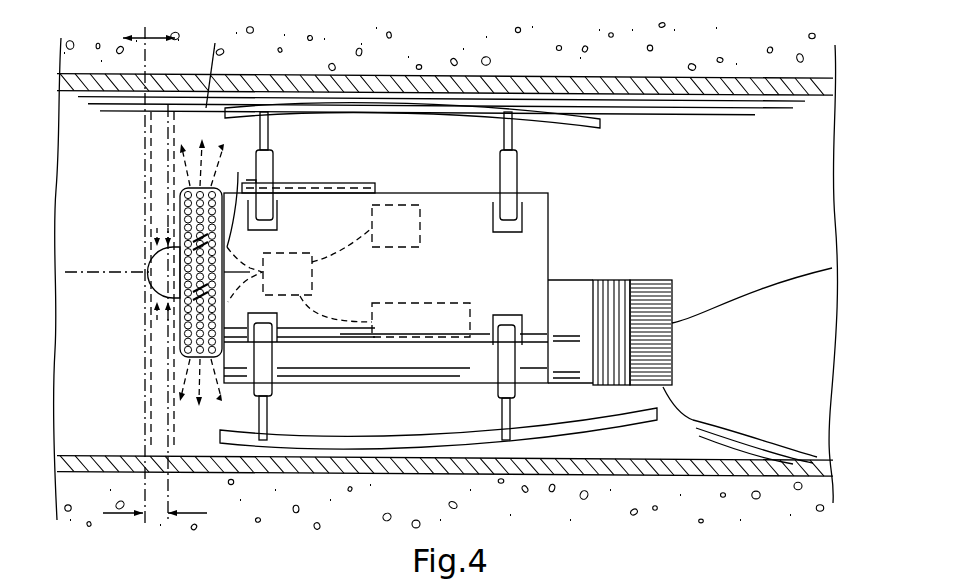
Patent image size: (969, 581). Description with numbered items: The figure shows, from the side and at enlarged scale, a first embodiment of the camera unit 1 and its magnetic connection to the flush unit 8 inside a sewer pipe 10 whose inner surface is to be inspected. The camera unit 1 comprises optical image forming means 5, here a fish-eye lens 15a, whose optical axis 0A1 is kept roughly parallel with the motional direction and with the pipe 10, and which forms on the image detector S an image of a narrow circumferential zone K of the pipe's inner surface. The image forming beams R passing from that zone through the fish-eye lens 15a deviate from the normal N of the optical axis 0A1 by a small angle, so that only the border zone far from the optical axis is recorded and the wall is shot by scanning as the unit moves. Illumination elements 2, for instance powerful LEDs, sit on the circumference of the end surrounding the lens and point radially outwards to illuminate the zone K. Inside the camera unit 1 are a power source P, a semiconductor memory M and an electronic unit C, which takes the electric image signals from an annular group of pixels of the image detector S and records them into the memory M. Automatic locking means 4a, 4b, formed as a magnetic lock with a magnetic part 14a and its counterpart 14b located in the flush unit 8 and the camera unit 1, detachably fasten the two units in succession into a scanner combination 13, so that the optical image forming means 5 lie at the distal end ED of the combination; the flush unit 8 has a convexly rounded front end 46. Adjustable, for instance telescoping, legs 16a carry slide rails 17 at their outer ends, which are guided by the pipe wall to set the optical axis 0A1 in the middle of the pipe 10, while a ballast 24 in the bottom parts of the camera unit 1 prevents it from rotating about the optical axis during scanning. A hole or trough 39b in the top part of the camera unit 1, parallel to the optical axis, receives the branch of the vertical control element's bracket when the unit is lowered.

The sewer pipe 10 is at (723, 83).
The slide rails 17 is at (537, 112).
The adjustable legs 16a is at (499, 162).
The camera unit 1 is at (472, 276).
The hole or trough 39b is at (328, 183).
The ballast 24 is at (385, 352).
The electronic unit C is at (298, 275).
The memory M is at (396, 226).
The power source P is at (421, 320).
The illumination elements 2 is at (183, 331).
The optical image forming means 5 is at (126, 256).
The fish-eye lens 15a is at (152, 273).
The optical axis 0A1 is at (90, 275).
The image forming beams R is at (157, 153).
The normal of the optical axis N is at (149, 43).
The circumferential zone K is at (155, 501).
The distal end ED is at (219, 63).
The image detector S is at (236, 199).
The magnetic part 14a is at (668, 281).
The counterpart 14b is at (668, 281).
The automatic locking means 4a is at (612, 282).
The automatic locking means 4b is at (650, 282).
The flush unit 8 is at (795, 373).
The scanner combination 13 is at (662, 437).
The front end 46 is at (723, 357).